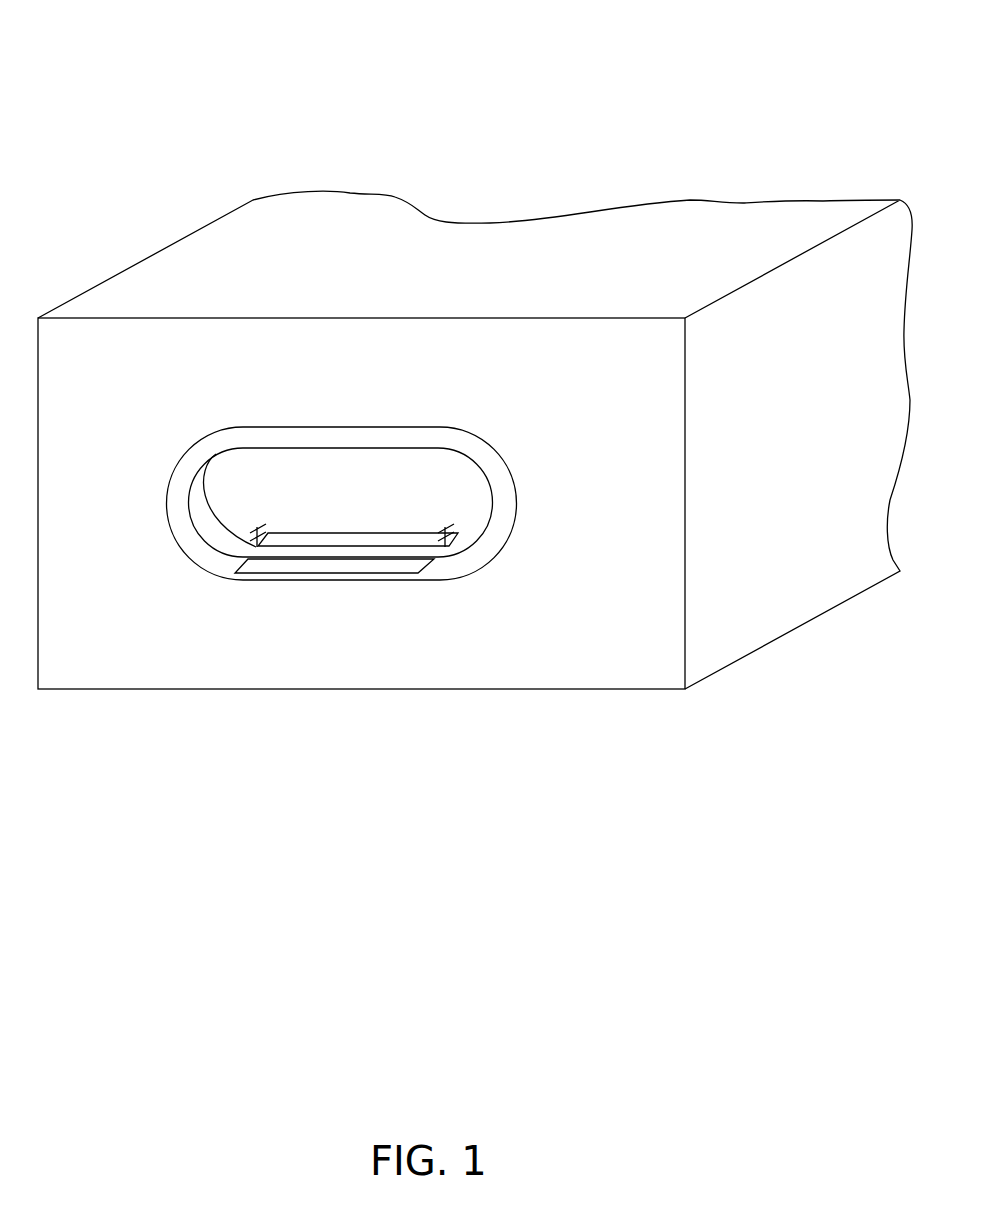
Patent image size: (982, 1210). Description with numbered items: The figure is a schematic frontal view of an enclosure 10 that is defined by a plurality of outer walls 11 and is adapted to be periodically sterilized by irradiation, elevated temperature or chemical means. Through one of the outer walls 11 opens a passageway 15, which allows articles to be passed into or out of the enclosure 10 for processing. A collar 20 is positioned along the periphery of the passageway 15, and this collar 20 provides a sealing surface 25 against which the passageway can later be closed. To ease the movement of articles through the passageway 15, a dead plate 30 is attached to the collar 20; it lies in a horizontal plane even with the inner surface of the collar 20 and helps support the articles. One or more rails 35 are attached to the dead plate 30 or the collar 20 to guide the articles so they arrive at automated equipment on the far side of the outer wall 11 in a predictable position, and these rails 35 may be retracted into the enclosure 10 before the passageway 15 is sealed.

The enclosure 10 is at (475, 349).
The outer wall 11 is at (622, 352).
The passageway 15 is at (466, 494).
The collar 20 is at (330, 437).
The sealing surface 25 is at (208, 496).
The dead plate 30 is at (351, 540).
The rail 35 is at (272, 521).